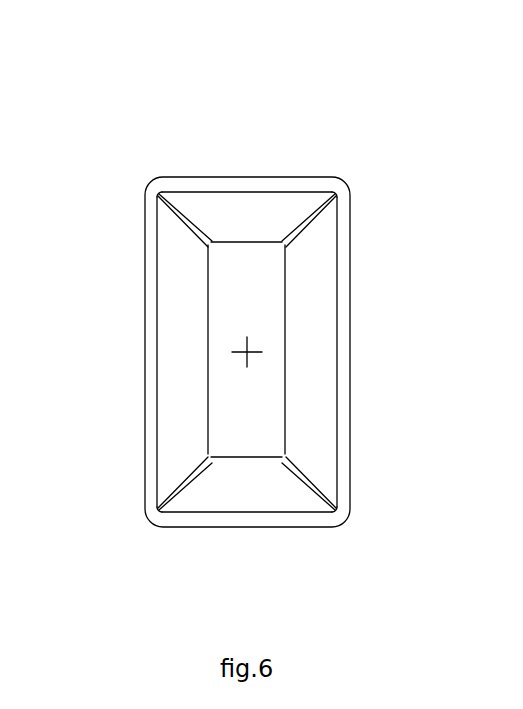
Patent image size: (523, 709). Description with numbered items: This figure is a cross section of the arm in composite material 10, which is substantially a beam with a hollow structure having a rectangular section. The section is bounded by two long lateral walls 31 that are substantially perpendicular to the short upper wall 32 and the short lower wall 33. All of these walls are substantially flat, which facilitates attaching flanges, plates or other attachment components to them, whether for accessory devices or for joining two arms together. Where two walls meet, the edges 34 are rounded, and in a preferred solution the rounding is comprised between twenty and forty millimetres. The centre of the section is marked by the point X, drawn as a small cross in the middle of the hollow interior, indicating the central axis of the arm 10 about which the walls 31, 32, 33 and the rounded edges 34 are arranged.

The arm in composite material 10 is at (386, 226).
The long lateral walls 31 is at (181, 351).
The upper wall 32 is at (248, 185).
The lower wall 33 is at (239, 519).
The edges 34 is at (160, 193).
The central axis point X is at (247, 356).